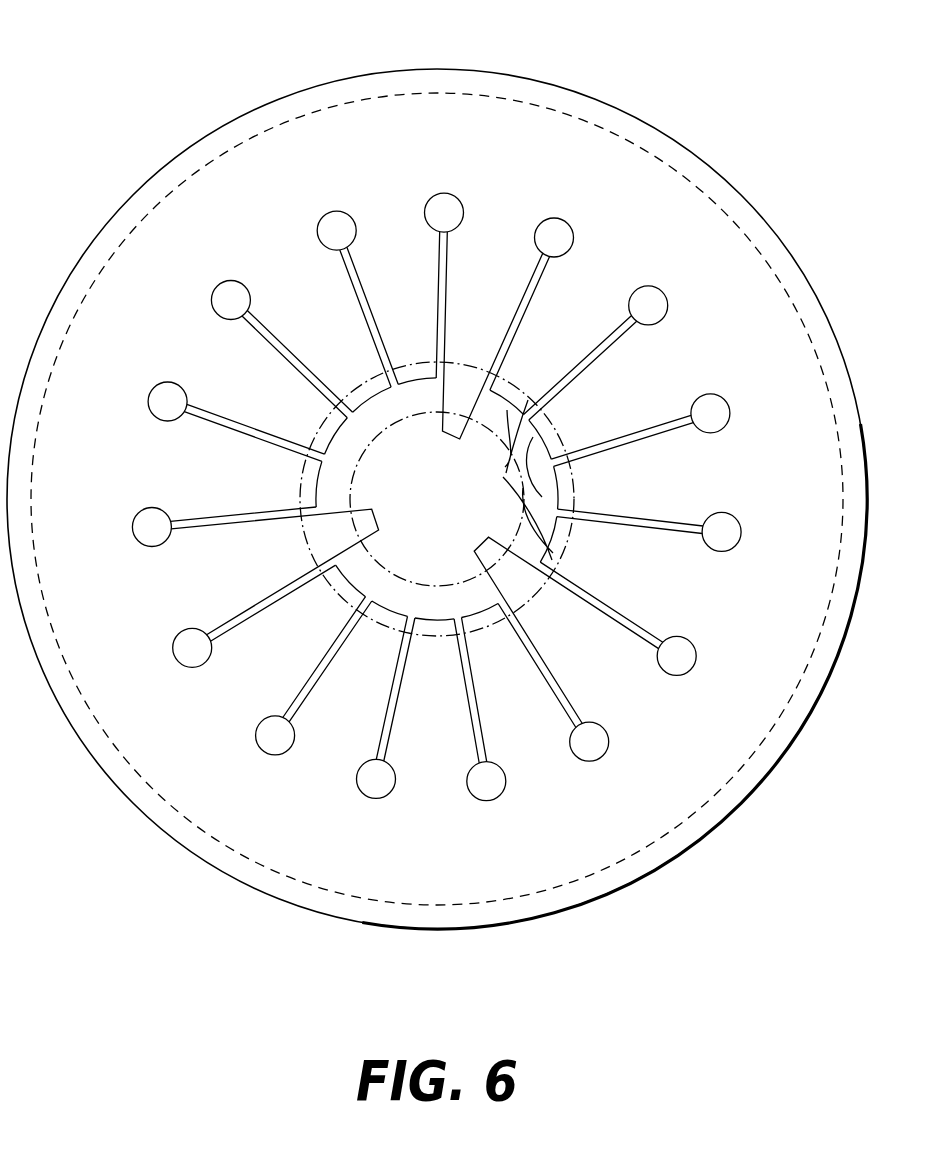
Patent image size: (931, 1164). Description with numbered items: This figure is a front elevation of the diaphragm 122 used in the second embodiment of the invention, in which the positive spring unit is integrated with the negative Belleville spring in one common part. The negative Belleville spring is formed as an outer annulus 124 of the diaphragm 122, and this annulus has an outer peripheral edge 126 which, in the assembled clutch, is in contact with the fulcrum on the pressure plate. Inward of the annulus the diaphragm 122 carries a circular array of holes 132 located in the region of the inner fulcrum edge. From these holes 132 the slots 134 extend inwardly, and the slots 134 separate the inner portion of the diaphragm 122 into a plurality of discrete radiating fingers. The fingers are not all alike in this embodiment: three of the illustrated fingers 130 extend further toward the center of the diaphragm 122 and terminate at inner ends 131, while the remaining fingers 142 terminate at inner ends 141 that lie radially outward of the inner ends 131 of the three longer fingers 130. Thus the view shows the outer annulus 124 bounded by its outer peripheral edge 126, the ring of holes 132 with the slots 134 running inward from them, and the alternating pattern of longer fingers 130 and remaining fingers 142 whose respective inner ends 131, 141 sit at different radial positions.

The diaphragm 122 is at (213, 118).
The outer annulus 124 is at (537, 170).
The outer peripheral edge 126 is at (482, 68).
The fingers 130 is at (505, 327).
The inner ends 131 is at (446, 437).
The holes 132 is at (548, 230).
The slots 134 is at (514, 355).
The inner ends 141 is at (506, 480).
The remaining fingers 142 is at (609, 307).